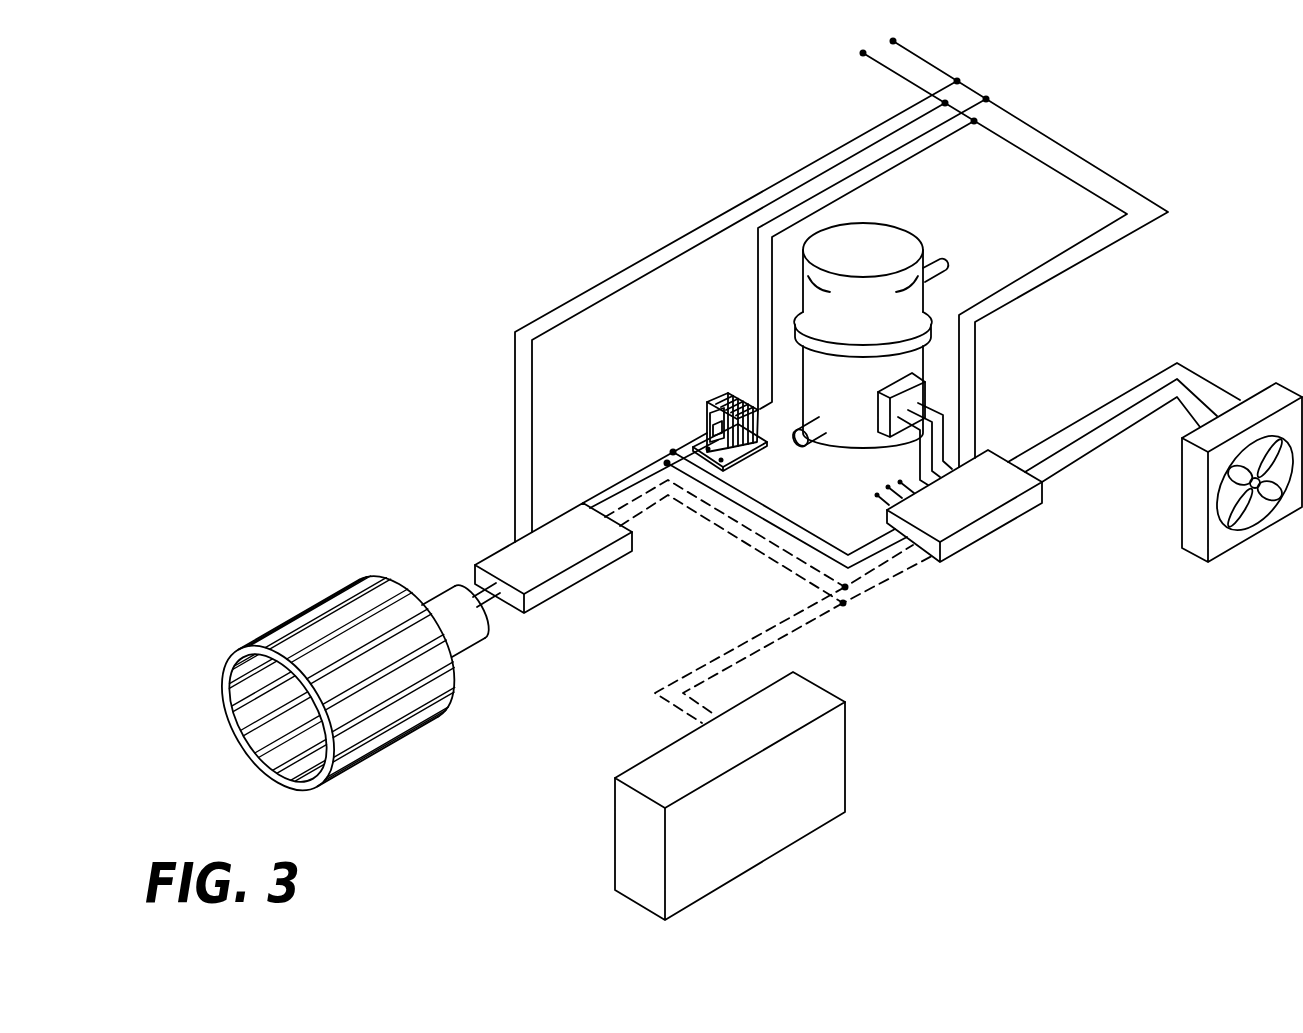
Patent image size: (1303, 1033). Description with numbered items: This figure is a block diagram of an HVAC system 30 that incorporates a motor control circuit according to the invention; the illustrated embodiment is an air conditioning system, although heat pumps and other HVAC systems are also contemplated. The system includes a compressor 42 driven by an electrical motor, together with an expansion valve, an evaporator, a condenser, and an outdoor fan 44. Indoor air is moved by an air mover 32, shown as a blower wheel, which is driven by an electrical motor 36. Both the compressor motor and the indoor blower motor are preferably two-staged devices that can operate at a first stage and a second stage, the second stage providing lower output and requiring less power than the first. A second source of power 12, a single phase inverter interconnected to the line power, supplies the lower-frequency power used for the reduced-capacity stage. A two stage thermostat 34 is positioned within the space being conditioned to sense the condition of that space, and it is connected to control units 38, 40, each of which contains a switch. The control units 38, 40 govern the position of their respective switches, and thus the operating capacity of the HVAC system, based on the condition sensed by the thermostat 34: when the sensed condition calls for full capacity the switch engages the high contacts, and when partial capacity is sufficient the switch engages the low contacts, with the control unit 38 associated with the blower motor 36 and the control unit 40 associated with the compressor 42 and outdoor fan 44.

The HVAC system wiring 30 is at (662, 200).
The compressor 42 is at (907, 232).
The second source of power 12 is at (752, 450).
The control unit 40 is at (985, 537).
The outdoor fan 44 is at (1220, 557).
The two stage thermostat 34 is at (845, 803).
The control unit 38 is at (577, 582).
The electrical motor 36 is at (477, 650).
The air mover 32 is at (437, 718).